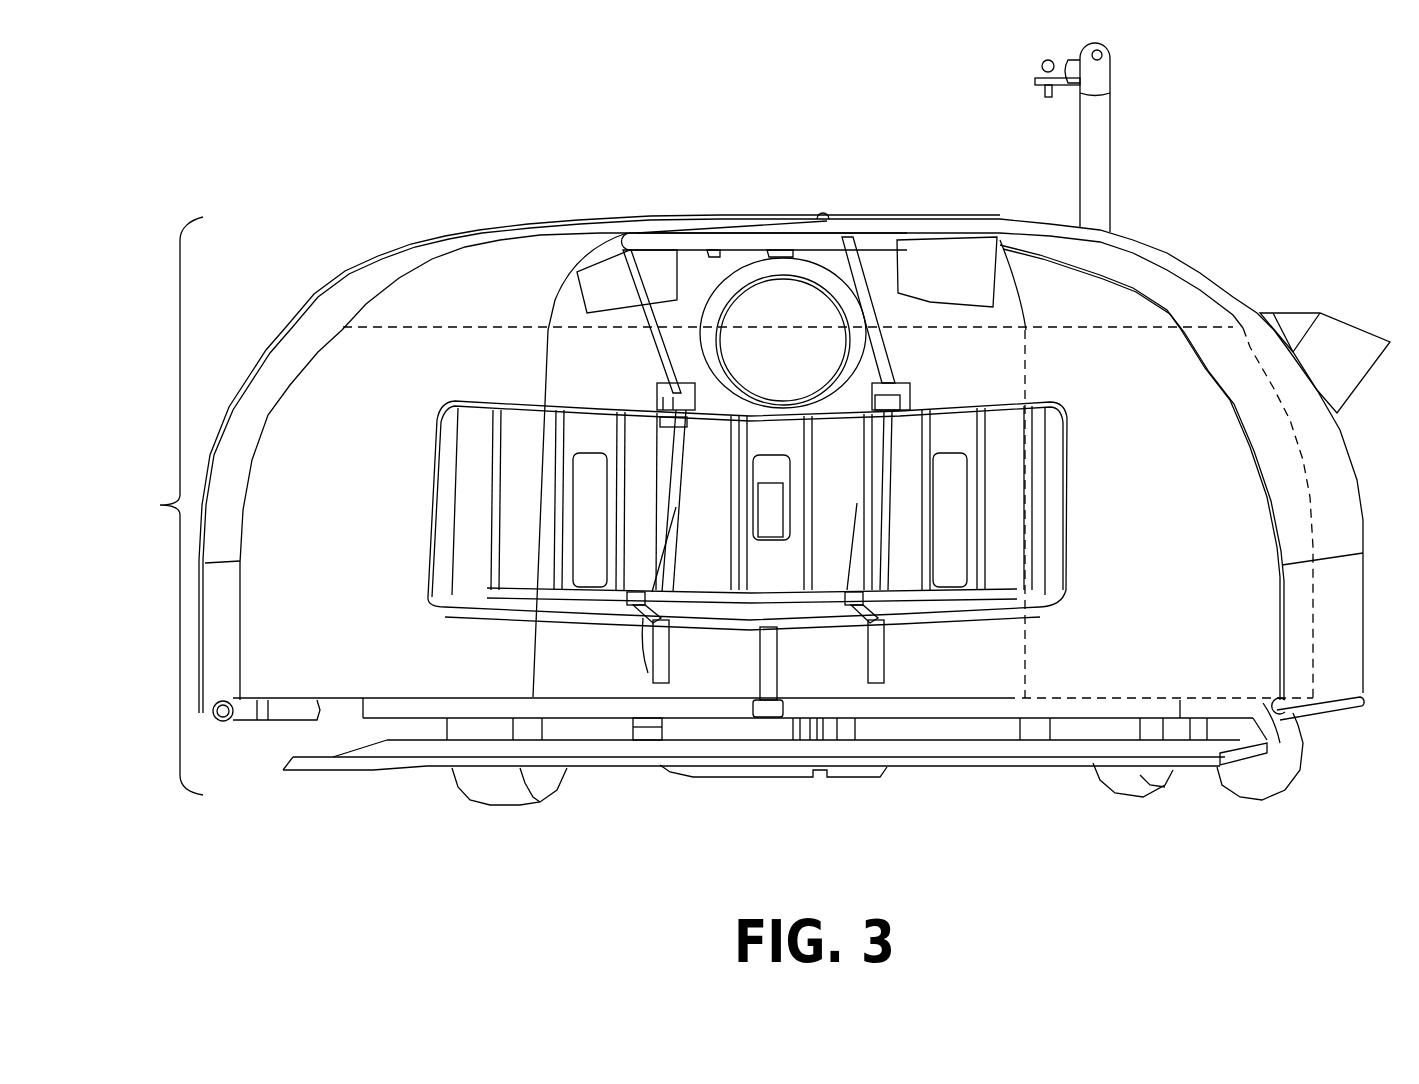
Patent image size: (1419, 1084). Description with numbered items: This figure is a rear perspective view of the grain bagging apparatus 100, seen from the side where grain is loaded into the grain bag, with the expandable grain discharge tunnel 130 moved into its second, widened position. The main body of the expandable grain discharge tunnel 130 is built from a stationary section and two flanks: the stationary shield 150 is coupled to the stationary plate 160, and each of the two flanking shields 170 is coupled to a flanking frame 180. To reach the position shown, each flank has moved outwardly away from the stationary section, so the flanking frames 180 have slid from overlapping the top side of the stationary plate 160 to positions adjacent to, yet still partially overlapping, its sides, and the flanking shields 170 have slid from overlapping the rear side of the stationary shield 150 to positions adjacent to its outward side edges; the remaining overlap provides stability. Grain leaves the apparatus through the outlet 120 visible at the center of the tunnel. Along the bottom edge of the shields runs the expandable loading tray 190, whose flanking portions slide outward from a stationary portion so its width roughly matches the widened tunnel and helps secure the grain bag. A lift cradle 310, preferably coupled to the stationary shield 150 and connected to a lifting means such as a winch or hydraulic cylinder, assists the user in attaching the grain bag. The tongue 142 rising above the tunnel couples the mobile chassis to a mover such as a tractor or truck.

The grain bagging apparatus 100 is at (1262, 120).
The outlet 120 is at (802, 310).
The expandable grain discharge tunnel 130 is at (670, 506).
The tongue 142 is at (1113, 128).
The stationary shield 150 is at (850, 667).
The stationary plate 160 is at (747, 217).
The flanking shield 170 is at (508, 300).
The flanking frame 180 is at (272, 353).
The expandable loading tray 190 is at (585, 763).
The lift cradle 310 is at (920, 507).